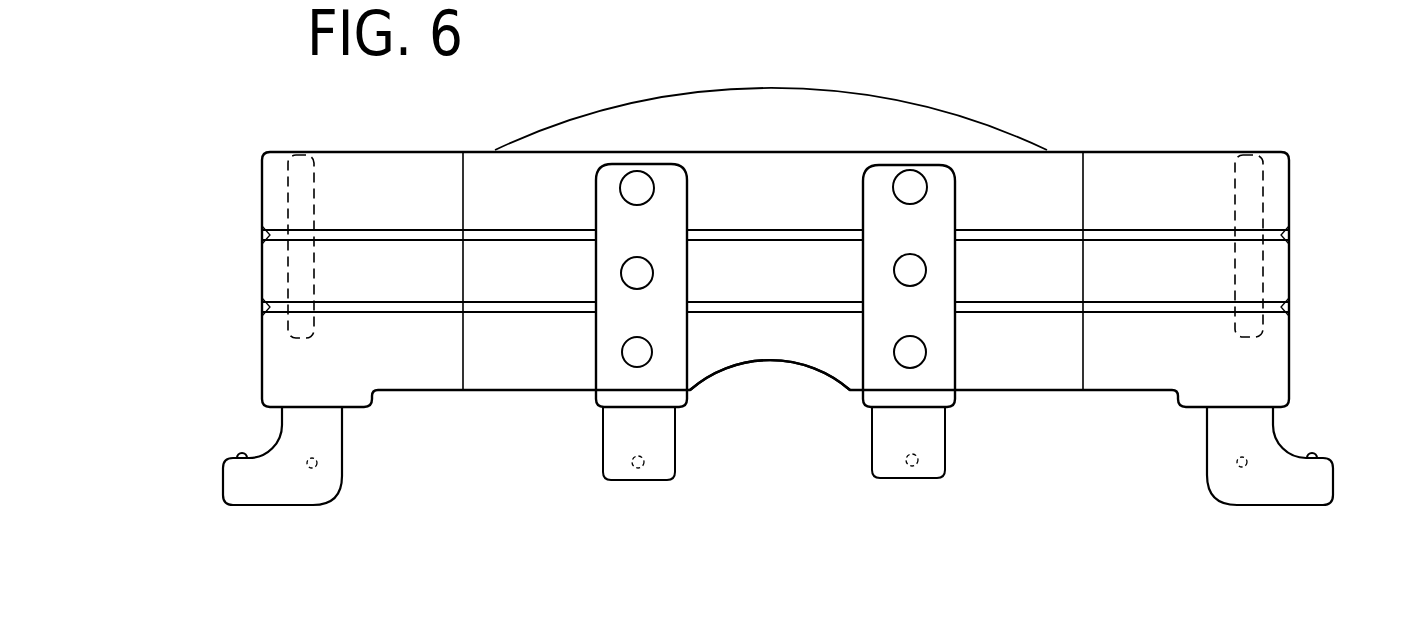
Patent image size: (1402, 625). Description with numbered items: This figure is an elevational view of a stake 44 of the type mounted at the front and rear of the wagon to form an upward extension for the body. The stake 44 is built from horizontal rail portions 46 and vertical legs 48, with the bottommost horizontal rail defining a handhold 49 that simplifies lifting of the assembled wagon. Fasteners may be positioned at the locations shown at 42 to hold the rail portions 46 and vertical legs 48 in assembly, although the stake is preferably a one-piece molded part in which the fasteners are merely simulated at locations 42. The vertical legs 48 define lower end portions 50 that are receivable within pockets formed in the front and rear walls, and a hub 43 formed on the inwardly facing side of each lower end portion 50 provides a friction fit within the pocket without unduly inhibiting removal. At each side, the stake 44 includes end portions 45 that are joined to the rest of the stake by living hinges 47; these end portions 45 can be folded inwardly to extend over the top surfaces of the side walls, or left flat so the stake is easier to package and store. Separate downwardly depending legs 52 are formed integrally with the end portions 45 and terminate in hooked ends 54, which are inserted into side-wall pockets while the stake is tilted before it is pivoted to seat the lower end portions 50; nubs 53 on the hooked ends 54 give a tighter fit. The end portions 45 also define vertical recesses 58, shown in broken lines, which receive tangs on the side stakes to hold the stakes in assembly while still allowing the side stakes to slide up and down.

The fastener locations 42 is at (622, 355).
The hub 43 is at (912, 468).
The stake 44 is at (622, 80).
The end portions 45 is at (362, 170).
The horizontal rail portions 46 is at (502, 290).
The living hinges 47 is at (462, 206).
The vertical legs 48 is at (621, 275).
The handhold 49 is at (773, 367).
The lower end portions 50 is at (625, 425).
The downwardly depending legs 52 is at (330, 430).
The nubs 53 is at (320, 462).
The hooked ends 54 is at (248, 477).
The vertical recesses 58 is at (313, 185).